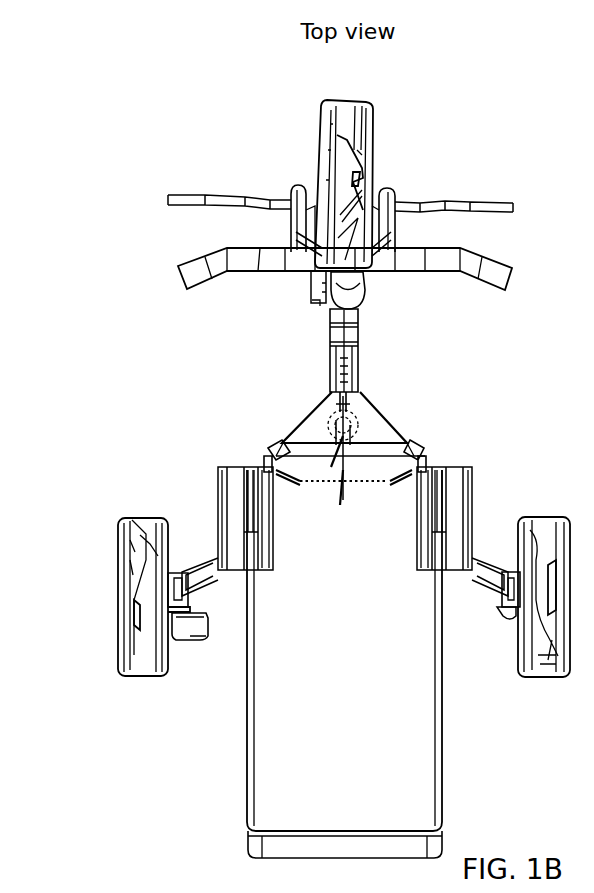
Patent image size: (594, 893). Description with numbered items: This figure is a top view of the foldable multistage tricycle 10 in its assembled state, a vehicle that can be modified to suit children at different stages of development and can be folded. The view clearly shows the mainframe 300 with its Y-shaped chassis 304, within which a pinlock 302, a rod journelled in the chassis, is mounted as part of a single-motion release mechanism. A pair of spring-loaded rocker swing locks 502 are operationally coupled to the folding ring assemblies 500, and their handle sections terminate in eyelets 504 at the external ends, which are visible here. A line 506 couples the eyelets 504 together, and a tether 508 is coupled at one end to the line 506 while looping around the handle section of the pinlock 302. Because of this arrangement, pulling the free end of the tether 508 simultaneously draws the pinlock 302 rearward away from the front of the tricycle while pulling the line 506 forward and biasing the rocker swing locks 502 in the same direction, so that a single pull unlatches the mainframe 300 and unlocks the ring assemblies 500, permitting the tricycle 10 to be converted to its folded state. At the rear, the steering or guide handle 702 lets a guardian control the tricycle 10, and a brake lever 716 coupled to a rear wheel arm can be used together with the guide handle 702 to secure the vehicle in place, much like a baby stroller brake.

The foldable multistage tricycle 10 is at (90, 271).
The mainframe 300 is at (305, 351).
The pinlock 302 is at (330, 418).
The Y-shaped chassis 304 is at (330, 428).
The folding ring assemblies 500 is at (498, 480).
The spring-loaded rocker swing locks 502 is at (406, 443).
The eyelets 504 is at (400, 457).
The line 506 is at (305, 470).
The tether 508 is at (343, 502).
The steering/guide handle 702 is at (245, 810).
The brake lever 716 is at (195, 640).